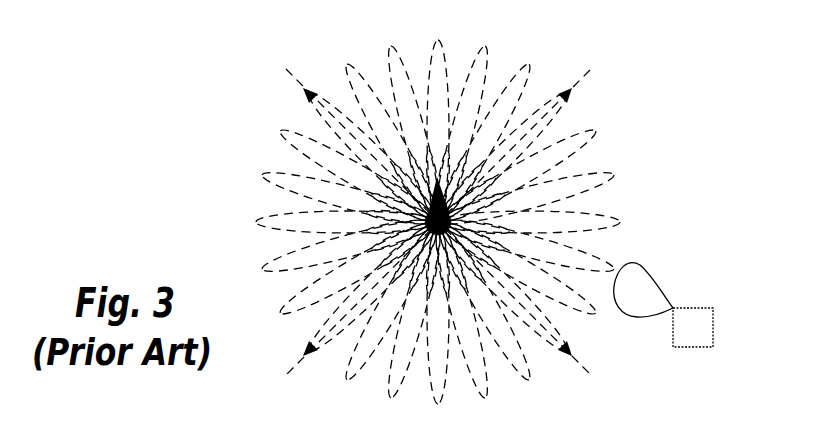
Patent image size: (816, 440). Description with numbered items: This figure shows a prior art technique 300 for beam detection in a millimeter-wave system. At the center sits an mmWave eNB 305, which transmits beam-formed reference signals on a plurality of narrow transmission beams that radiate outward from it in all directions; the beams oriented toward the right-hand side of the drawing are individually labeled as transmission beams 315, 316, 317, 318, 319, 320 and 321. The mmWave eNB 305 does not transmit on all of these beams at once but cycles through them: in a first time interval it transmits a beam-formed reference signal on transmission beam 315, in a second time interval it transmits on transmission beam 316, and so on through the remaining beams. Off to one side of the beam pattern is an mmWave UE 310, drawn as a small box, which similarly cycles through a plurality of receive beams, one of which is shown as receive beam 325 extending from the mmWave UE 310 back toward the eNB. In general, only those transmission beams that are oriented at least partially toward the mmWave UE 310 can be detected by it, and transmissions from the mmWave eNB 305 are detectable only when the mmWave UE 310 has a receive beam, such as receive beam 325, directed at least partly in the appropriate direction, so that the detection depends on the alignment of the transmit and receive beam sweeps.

The prior art technique 300 is at (684, 60).
The mmWave eNB 305 is at (440, 195).
The mmWave UE 310 is at (705, 308).
The transmission beam 315 is at (566, 96).
The transmission beam 316 is at (586, 133).
The transmission beam 317 is at (604, 174).
The transmission beam 318 is at (608, 222).
The transmission beam 319 is at (605, 263).
The transmission beam 320 is at (590, 311).
The transmission beam 321 is at (557, 346).
The receive beam 325 is at (654, 278).